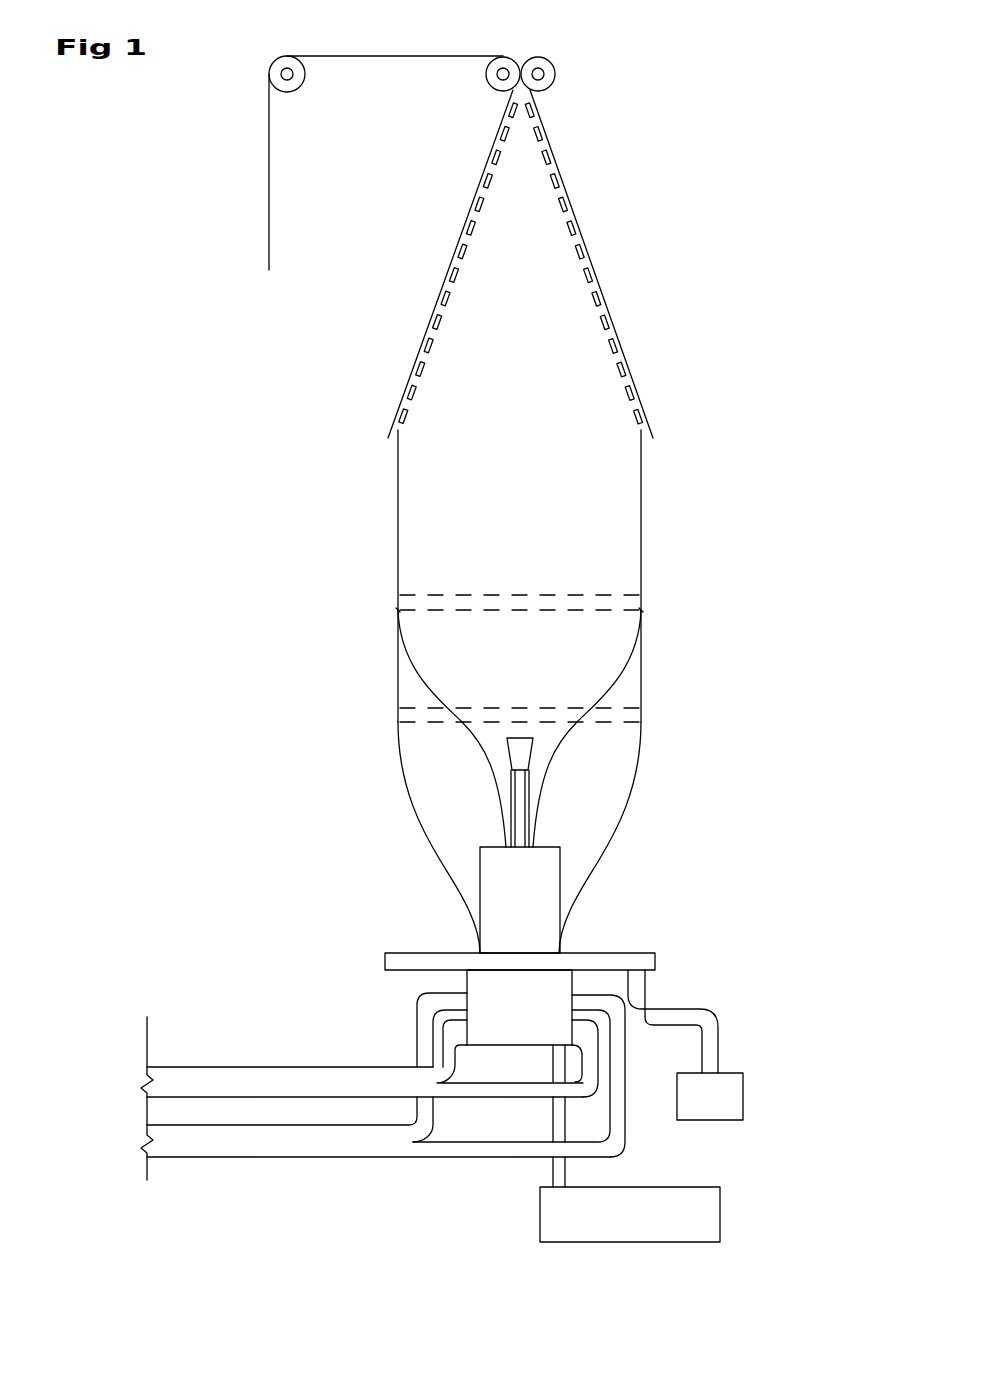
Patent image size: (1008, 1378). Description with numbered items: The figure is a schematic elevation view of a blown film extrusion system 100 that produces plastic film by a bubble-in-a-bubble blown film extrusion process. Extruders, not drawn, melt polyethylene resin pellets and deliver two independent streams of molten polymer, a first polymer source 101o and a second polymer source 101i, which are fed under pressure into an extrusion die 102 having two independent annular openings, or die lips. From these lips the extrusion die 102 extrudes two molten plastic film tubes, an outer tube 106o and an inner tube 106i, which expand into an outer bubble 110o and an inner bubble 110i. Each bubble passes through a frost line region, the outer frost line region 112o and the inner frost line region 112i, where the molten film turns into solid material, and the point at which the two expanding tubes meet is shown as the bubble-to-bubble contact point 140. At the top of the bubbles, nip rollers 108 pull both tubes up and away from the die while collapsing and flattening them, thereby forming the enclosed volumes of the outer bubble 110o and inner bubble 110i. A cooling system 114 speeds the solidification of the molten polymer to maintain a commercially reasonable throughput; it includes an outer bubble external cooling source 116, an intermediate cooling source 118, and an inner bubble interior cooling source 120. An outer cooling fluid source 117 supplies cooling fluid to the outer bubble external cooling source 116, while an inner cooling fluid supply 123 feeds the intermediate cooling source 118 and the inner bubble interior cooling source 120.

The blown film extrusion system 100 is at (792, 183).
The nip rollers 108 is at (503, 57).
The inner bubble 110i is at (608, 513).
The outer bubble 110o is at (460, 793).
The inner frost line region 112i is at (415, 603).
The outer frost line region 112o is at (415, 717).
The bubble-to-bubble contact point 140 is at (398, 610).
The inner tube 106i is at (617, 672).
The outer tube 106o is at (642, 753).
The inner bubble interior cooling source 120 is at (523, 704).
The intermediate cooling source 118 is at (579, 836).
The cooling system 114 is at (745, 884).
The outer bubble external cooling source 116 is at (713, 997).
The outer cooling fluid source 117 is at (743, 1102).
The extrusion die 102 is at (483, 994).
The first polymer source 101o is at (255, 1067).
The second polymer source 101i is at (250, 1157).
The inner cooling fluid supply 123 is at (720, 1216).